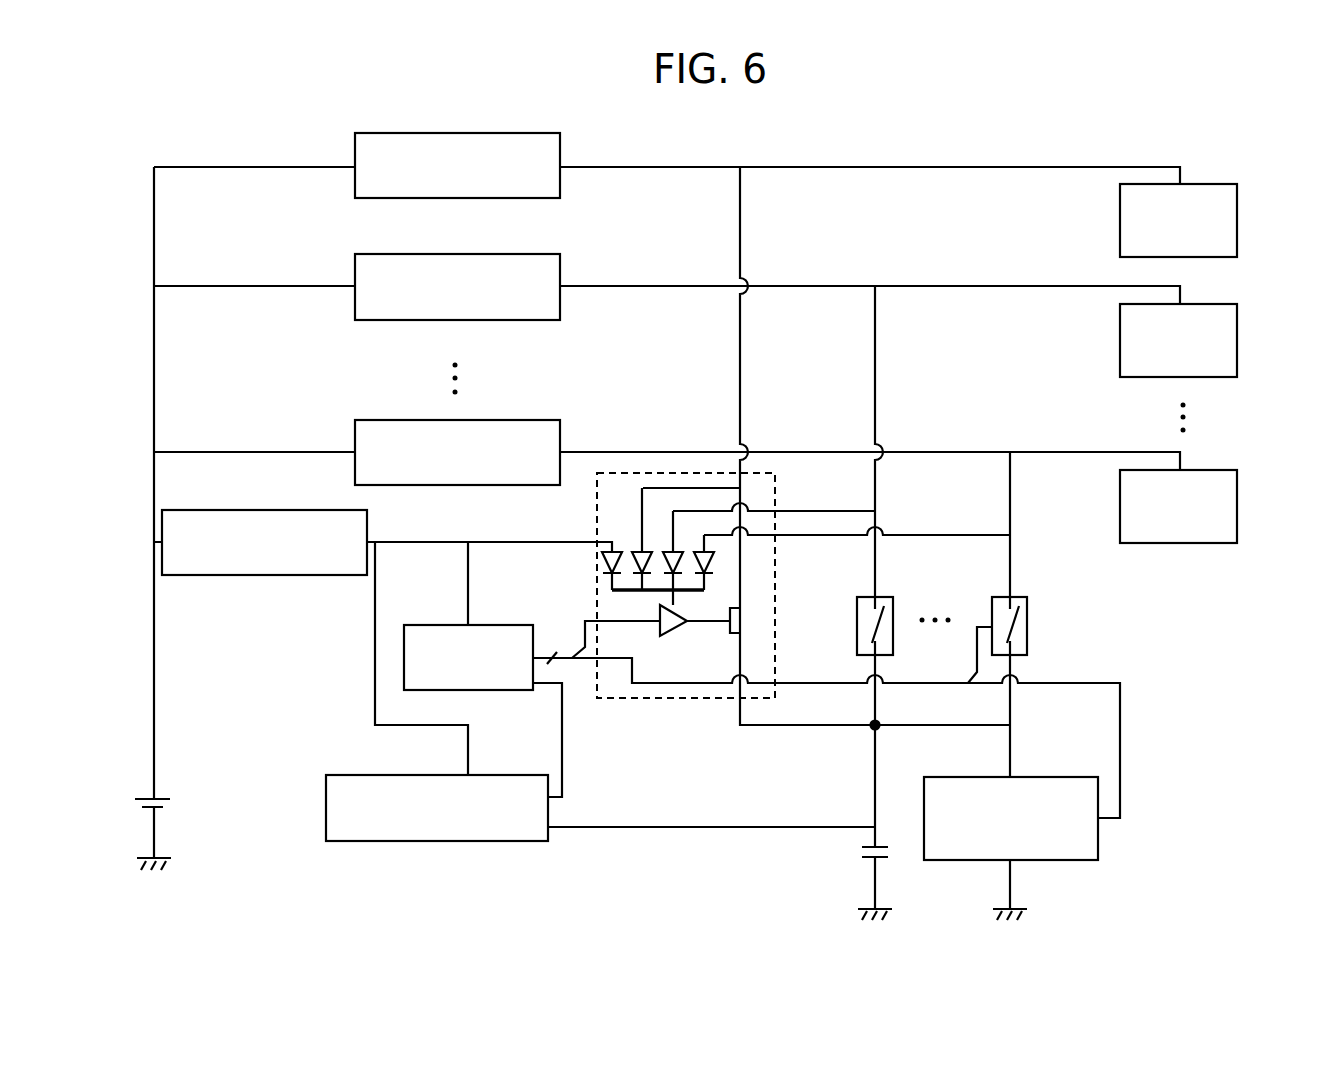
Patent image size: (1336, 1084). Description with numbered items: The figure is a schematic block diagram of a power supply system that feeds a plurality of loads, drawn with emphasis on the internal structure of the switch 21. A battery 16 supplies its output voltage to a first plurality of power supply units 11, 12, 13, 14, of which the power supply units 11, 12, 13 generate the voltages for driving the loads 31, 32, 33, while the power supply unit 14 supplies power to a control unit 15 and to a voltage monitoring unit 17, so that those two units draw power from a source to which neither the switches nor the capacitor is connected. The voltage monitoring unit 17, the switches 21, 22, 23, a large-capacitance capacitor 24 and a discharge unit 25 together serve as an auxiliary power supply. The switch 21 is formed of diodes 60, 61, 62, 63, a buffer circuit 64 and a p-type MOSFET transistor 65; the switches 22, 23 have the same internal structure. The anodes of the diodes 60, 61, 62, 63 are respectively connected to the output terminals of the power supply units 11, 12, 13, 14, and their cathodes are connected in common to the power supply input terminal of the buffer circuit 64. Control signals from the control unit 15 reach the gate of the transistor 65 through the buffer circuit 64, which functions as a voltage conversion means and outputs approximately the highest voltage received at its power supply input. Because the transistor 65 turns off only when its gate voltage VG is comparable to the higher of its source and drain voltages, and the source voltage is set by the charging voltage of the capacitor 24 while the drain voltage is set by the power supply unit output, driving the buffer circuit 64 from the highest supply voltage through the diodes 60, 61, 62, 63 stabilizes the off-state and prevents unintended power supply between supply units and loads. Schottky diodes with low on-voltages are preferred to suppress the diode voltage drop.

The power supply unit 11 is at (518, 133).
The power supply unit 12 is at (518, 254).
The power supply unit 13 is at (518, 420).
The power supply unit 14 is at (222, 510).
The control unit 15 is at (525, 625).
The battery 16 is at (157, 797).
The voltage monitoring unit 17 is at (500, 775).
The switch 21 is at (716, 532).
The switch 22 is at (893, 612).
The switch 23 is at (1027, 612).
The large-capacitance capacitor 24 is at (868, 860).
The discharge unit 25 is at (1050, 777).
The load 31 is at (1237, 220).
The load 32 is at (1237, 340).
The load 33 is at (1237, 506).
The diode 60 is at (788, 537).
The diode 61 is at (641, 551).
The diode 62 is at (672, 551).
The diode 63 is at (712, 548).
The buffer circuit 64 is at (672, 636).
The transistor 65 is at (733, 631).